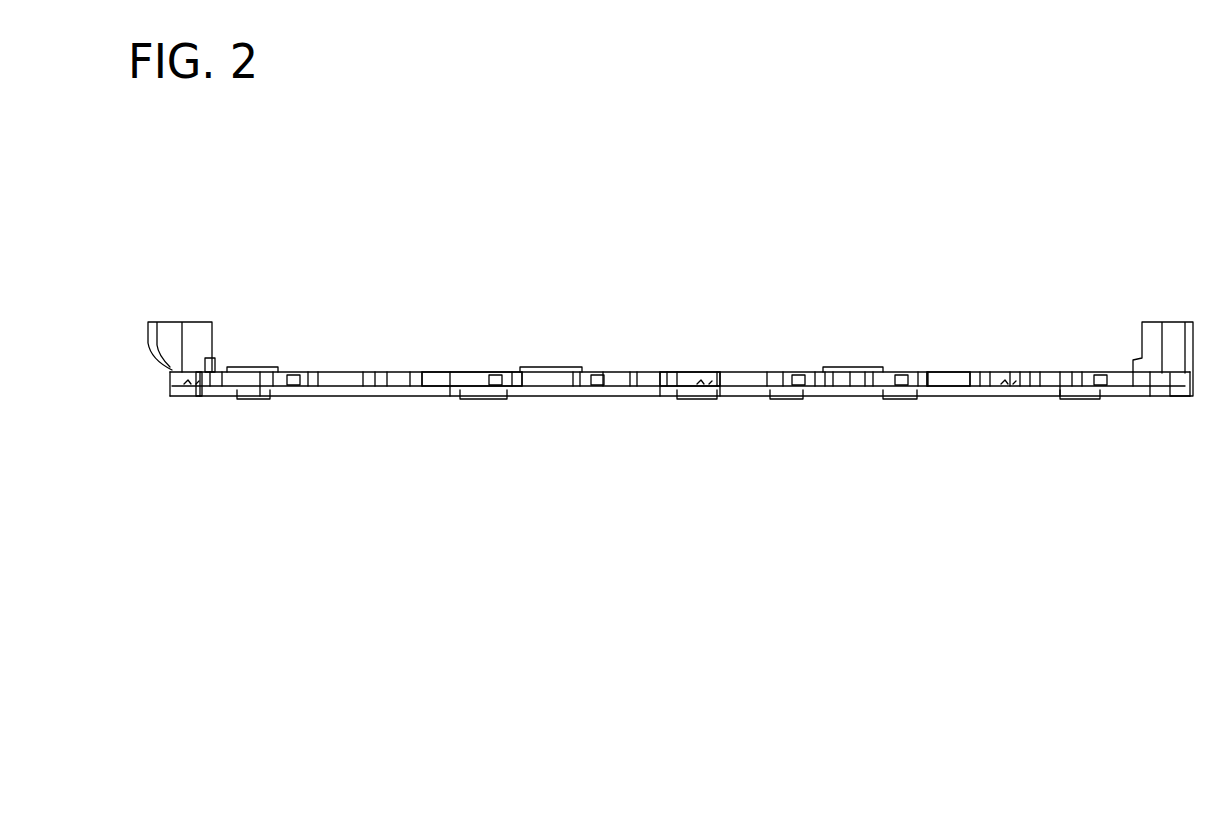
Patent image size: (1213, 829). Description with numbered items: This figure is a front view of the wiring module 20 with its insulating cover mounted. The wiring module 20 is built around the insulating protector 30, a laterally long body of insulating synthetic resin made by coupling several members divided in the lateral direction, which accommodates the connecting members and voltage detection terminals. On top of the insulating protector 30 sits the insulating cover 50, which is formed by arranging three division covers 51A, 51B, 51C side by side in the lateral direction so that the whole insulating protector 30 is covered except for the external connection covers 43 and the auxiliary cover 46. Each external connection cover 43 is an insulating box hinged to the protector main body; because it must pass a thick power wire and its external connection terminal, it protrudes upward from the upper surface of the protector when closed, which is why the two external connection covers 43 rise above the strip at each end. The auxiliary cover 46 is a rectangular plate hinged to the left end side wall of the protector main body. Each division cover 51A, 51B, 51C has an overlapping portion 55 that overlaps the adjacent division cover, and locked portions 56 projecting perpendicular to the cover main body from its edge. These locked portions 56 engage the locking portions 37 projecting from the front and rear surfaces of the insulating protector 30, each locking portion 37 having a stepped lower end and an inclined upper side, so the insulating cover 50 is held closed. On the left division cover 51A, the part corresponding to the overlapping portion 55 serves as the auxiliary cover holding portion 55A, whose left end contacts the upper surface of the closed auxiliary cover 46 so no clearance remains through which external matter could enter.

The wiring module 20 is at (852, 167).
The insulating protector 30 is at (637, 424).
The locking portion 37 is at (293, 378).
The external connection cover 43 is at (176, 321).
The auxiliary cover 46 is at (198, 373).
The insulating cover 50 is at (848, 285).
The division cover 51A is at (424, 373).
The division cover 51B is at (718, 375).
The division cover 51C is at (952, 373).
The overlapping portion 55 is at (543, 373).
The auxiliary cover holding portion 55A is at (252, 367).
The locked portion 56 is at (313, 378).